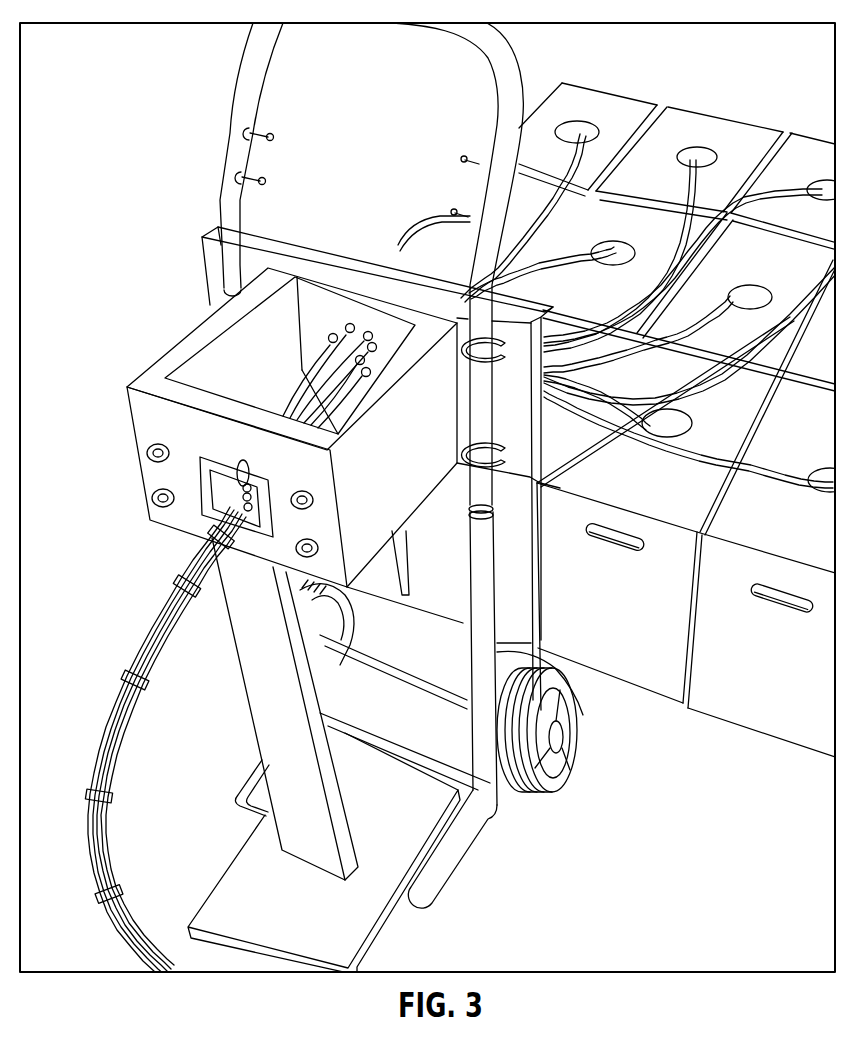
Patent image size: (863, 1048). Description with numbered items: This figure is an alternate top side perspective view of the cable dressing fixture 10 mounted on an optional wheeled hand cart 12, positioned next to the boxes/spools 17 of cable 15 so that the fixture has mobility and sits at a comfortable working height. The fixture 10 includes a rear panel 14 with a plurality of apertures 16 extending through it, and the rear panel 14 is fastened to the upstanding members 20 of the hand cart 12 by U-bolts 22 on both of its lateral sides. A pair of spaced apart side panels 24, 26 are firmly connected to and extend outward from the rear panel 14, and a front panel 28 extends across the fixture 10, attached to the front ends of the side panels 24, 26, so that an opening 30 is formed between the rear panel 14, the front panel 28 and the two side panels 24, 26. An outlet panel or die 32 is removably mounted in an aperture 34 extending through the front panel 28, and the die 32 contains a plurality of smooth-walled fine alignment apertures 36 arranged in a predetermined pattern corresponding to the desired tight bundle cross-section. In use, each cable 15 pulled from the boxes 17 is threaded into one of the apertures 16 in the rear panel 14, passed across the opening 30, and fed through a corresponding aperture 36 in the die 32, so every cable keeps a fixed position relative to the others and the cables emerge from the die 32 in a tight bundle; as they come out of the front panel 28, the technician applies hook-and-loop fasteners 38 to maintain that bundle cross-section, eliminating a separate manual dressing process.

The cable dressing fixture 10 is at (330, 226).
The wheeled hand cart 12 is at (517, 812).
The rear panel 14 is at (347, 263).
The cables 15 is at (320, 400).
The apertures 16 is at (353, 327).
The boxes/spools of cable 17 is at (707, 117).
The upstanding members 20 is at (583, 705).
The U-bolts 22 is at (506, 447).
The side panel 24 is at (190, 348).
The side panel 26 is at (367, 490).
The front panel 28 is at (157, 502).
The opening 30 is at (253, 390).
The outlet panel or die 32 is at (347, 633).
The aperture 34 is at (243, 460).
The fine alignment apertures 36 is at (225, 507).
The hook-and-loop fasteners 38 is at (118, 678).